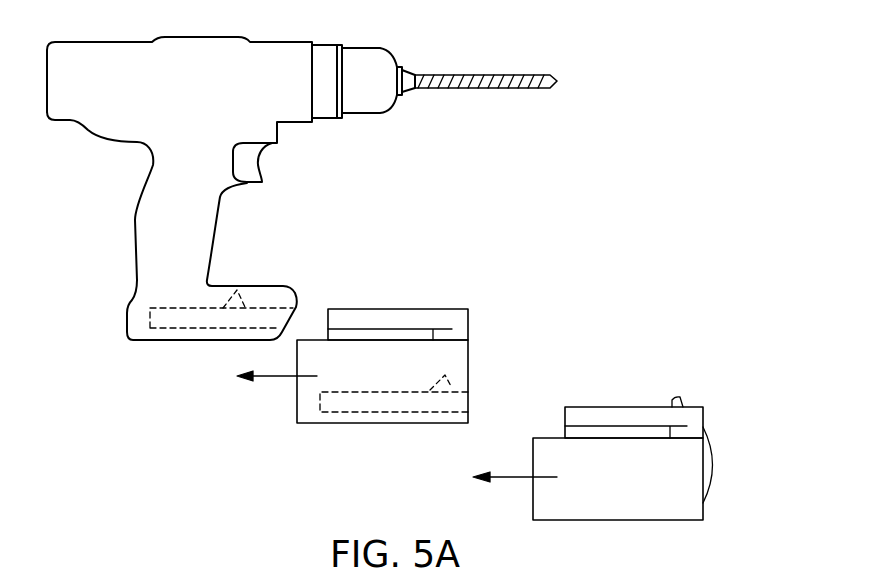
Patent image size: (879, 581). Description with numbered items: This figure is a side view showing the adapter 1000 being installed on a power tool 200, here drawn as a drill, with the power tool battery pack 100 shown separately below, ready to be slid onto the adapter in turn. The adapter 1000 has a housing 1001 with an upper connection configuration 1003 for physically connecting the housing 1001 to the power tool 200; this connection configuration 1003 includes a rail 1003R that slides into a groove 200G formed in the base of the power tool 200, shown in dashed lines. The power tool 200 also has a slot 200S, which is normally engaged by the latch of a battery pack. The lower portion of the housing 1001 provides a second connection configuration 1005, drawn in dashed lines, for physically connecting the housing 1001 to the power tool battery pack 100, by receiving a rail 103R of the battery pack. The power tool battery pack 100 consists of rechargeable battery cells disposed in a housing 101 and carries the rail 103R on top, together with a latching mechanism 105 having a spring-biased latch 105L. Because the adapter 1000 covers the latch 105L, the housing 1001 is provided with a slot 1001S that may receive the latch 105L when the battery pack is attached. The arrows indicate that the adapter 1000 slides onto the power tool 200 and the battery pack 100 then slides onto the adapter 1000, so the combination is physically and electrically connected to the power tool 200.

The power tool 200 is at (155, 203).
The slot 200S is at (247, 290).
The groove 200G is at (150, 322).
The adapter 1000 is at (389, 368).
The housing 1001 is at (307, 402).
The slot 1001S is at (450, 375).
The connection configuration 1003 is at (435, 296).
The rail 1003R is at (452, 312).
The connection configuration 1005 is at (363, 419).
The power tool battery pack 100 is at (613, 459).
The housing 101 is at (587, 512).
The rail 103R is at (580, 417).
The latching mechanism 105 is at (687, 402).
The latch 105L is at (685, 393).